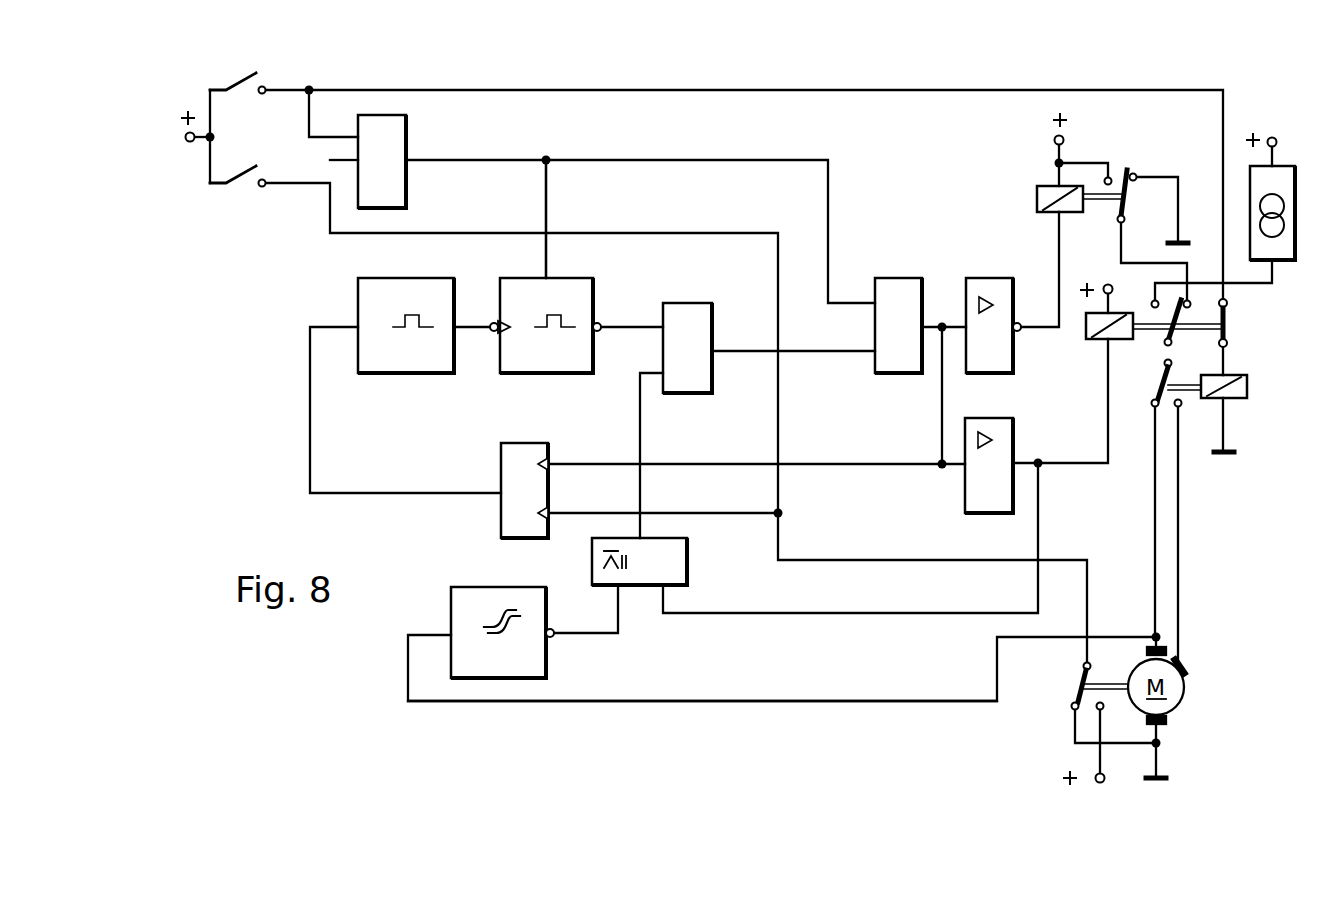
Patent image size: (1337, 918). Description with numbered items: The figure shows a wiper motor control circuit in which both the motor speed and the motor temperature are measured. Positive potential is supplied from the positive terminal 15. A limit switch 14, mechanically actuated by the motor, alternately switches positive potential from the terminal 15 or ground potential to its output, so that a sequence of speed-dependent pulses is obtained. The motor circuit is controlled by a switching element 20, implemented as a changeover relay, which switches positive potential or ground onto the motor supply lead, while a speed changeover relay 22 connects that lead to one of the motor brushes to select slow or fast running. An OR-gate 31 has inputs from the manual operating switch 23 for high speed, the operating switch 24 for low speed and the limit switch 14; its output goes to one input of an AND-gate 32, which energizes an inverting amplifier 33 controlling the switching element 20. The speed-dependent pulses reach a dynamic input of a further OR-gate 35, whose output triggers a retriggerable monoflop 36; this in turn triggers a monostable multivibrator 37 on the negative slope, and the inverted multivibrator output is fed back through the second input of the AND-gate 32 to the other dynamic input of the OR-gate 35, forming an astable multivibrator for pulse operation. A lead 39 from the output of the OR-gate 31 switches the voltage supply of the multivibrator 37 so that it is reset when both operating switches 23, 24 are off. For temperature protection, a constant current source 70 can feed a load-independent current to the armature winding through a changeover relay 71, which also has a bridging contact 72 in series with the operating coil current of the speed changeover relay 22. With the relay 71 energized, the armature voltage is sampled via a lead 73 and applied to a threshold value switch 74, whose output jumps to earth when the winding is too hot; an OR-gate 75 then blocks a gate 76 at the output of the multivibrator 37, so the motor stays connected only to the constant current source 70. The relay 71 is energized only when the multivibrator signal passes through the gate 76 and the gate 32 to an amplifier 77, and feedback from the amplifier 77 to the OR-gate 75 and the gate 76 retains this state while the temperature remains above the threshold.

The limit switch 14 is at (1068, 688).
The positive terminal 15 is at (190, 142).
The switching element 20 is at (1045, 190).
The speed changeover relay 22 is at (1240, 395).
The manual operating switch for high speed 23 is at (240, 82).
The operating switch for low speed 24 is at (243, 170).
The OR-gate 31 is at (404, 143).
The AND-gate 32 is at (905, 285).
The inverting amplifier 33 is at (1000, 285).
The OR-gate 35 is at (527, 538).
The monoflop 36 is at (412, 290).
The monostable multivibrator 37 is at (565, 290).
The lead 39 is at (548, 206).
The constant current source 70 is at (1283, 232).
The changeover relay 71 is at (1122, 340).
The bridging contact 72 is at (1229, 320).
The lead 73 is at (880, 700).
The threshold value switch 74 is at (533, 657).
The OR-gate 75 is at (687, 558).
The gate 76 is at (703, 310).
The amplifier 77 is at (1005, 432).